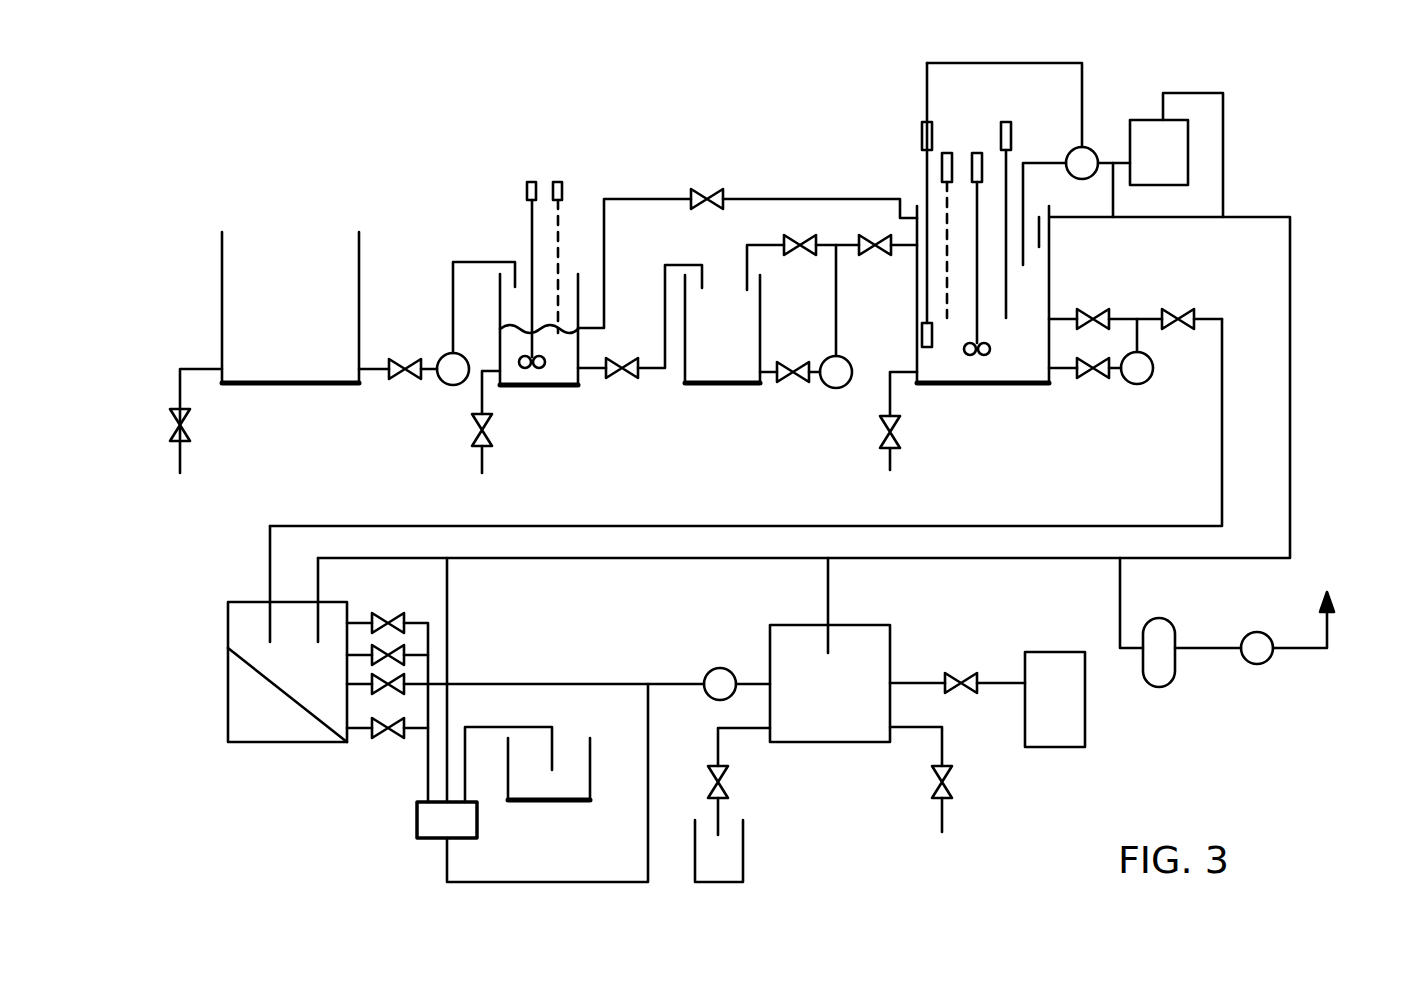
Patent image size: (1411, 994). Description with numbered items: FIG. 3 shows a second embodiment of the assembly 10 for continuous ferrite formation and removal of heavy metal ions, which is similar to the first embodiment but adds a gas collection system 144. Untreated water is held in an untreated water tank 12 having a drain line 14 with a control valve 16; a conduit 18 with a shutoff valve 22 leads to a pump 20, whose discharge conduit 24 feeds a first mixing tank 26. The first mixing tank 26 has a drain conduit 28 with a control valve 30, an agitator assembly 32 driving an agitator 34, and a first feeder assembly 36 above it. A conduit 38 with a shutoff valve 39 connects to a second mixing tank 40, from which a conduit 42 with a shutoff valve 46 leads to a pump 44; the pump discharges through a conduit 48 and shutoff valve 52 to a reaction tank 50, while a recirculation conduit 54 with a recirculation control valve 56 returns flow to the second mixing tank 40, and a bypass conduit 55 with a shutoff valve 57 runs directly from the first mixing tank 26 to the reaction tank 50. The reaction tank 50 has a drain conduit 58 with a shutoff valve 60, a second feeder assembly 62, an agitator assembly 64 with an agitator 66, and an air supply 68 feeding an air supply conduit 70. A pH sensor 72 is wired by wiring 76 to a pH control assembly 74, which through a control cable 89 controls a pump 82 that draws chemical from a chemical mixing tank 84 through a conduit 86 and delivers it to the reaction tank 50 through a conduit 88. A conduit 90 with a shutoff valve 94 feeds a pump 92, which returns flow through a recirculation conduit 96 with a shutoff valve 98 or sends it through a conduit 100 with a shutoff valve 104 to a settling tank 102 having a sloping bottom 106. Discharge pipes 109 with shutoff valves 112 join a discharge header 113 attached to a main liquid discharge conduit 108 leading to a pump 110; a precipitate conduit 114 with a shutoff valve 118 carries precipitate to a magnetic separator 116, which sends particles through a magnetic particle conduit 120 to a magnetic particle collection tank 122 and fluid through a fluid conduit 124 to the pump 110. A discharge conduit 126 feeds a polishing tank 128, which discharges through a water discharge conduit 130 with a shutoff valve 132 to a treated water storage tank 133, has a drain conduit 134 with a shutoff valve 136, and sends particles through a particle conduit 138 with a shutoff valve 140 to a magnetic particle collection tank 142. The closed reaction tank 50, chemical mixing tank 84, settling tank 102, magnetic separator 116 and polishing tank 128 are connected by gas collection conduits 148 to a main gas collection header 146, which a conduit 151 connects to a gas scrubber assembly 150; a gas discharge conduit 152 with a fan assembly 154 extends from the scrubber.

The assembly for continuous ferrite formation and removal of heavy metal ions 10 is at (465, 200).
The untreated water tank 12 is at (304, 302).
The drain line 14 is at (182, 468).
The control valve 16 is at (190, 425).
The conduit 18 is at (410, 358).
The pump 20 is at (445, 385).
The shutoff valve 22 is at (395, 380).
The discharge conduit 24 is at (472, 262).
The first mixing tank 26 is at (572, 387).
The drain conduit 28 is at (486, 404).
The control valve 30 is at (490, 440).
The agitator assembly 32 is at (524, 186).
The agitator 34 is at (500, 328).
The first feeder assembly 36 is at (560, 177).
The conduit 38 is at (668, 372).
The shutoff valve 39 is at (622, 378).
The second mixing tank 40 is at (728, 385).
The conduit 42 is at (770, 380).
The pump 44 is at (850, 364).
The shutoff valve 46 is at (794, 362).
The conduit 48 is at (836, 245).
The reaction tank 50 is at (975, 385).
The shutoff valve 52 is at (877, 258).
The recirculation conduit 54 is at (748, 252).
The bypass conduit 55 is at (635, 199).
The recirculation control valve 56 is at (804, 257).
The shutoff valve 57 is at (710, 196).
The drain conduit 58 is at (885, 393).
The shutoff valve 60 is at (900, 432).
The second feeder assembly 62 is at (947, 153).
The agitator assembly 64 is at (979, 150).
The agitator 66 is at (990, 342).
The air supply 68 is at (1043, 63).
The air supply conduit 70 is at (1010, 160).
The pH sensor 72 is at (932, 340).
The pH control assembly 74 is at (922, 135).
The wiring 76 is at (940, 175).
The pump 82 is at (1090, 198).
The chemical mixing tank 84 is at (1178, 171).
The conduit 86 is at (1113, 172).
The conduit 88 is at (1082, 132).
The control cable 89 is at (1084, 63).
The conduit 90 is at (1115, 380).
The pump 92 is at (1150, 382).
The shutoff valve 94 is at (1080, 380).
The recirculation conduit 96 is at (1125, 316).
The shutoff valve 98 is at (1090, 306).
The conduit 100 is at (1222, 465).
The settling tank 102 is at (228, 735).
The shutoff valve 104 is at (1190, 308).
The cone shaped or sloping bottom 106 is at (240, 645).
The main liquid discharge conduit 108 is at (535, 684).
The discharge pipes 109 is at (352, 686).
The pump 110 is at (705, 672).
The shutoff valves 112 is at (406, 645).
The discharge header 113 is at (448, 622).
The precipitate conduit 114 is at (425, 768).
The magnetic separator 116 is at (415, 825).
The shutoff valve 118 is at (378, 740).
The magnetic particle conduit 120 is at (505, 727).
The magnetic particle collection tank 122 is at (592, 750).
The fluid conduit 124 is at (548, 882).
The discharge conduit 126 is at (752, 680).
The polishing tank 128 is at (893, 625).
The water discharge conduit 130 is at (906, 683).
The shutoff valve 132 is at (965, 672).
The treated water storage tank 133 is at (1088, 730).
The drain conduit 134 is at (945, 748).
The shutoff valve 136 is at (952, 785).
The particle conduit 138 is at (715, 738).
The shutoff valve 140 is at (730, 782).
The magnetic particle collection tank 142 is at (745, 848).
The gas collection system 144 is at (1302, 237).
The main gas collection header 146 is at (1292, 472).
The gas collection conduits 148 is at (1225, 162).
The gas scrubber assembly 150 is at (1178, 690).
The conduit 151 is at (1125, 588).
The gas discharge conduit 152 is at (1200, 647).
The fan assembly 154 is at (1265, 662).